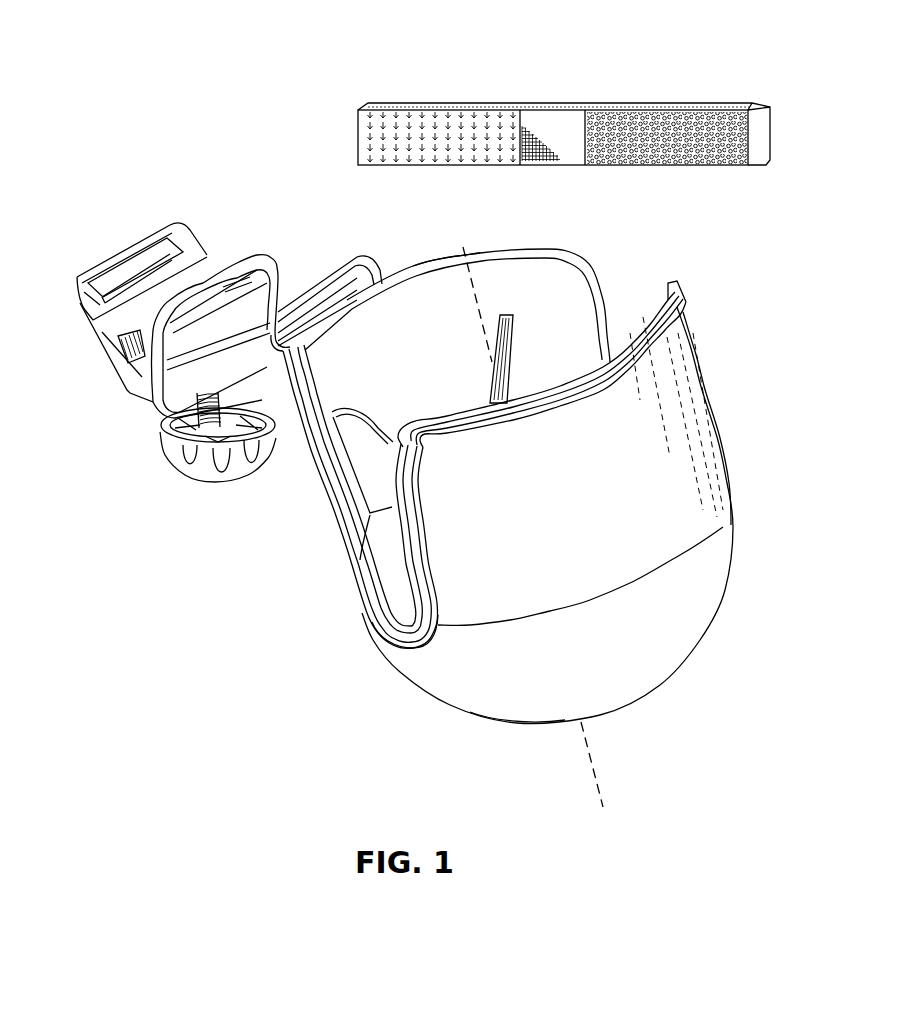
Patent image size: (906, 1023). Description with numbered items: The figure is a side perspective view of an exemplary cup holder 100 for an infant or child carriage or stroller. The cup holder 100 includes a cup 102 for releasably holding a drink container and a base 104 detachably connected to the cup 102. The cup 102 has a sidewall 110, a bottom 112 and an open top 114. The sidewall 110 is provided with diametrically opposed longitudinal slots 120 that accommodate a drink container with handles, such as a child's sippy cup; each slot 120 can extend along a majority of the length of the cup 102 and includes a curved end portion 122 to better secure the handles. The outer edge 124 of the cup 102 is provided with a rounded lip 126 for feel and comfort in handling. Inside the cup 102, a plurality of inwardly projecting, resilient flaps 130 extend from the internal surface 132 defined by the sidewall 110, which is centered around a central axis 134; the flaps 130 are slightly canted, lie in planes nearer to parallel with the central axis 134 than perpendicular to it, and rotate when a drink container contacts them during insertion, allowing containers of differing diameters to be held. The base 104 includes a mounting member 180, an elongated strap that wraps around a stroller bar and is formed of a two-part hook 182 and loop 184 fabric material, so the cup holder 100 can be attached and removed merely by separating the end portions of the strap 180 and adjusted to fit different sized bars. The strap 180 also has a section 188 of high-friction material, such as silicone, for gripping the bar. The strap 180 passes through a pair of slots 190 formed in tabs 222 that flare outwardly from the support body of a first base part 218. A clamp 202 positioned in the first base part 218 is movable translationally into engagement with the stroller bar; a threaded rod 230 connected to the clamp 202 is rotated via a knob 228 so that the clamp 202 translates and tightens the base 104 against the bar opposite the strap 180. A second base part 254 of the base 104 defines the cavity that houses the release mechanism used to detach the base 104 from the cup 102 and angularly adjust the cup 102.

The cup holder 100 is at (160, 80).
The cup 102 is at (726, 376).
The base 104 is at (58, 266).
The sidewall 110 is at (703, 470).
The bottom 112 is at (570, 720).
The open top 114 is at (513, 252).
The longitudinal slots 120 is at (603, 307).
The curved end portion 122 is at (403, 645).
The outer edge 124 is at (453, 277).
The rounded lip 126 is at (527, 403).
The resilient flaps 130 is at (503, 370).
The internal surface 132 is at (537, 288).
The central axis 134 is at (587, 740).
The mounting member 180 is at (615, 105).
The hook 182 is at (445, 118).
The loop 184 is at (693, 157).
The section 188 is at (560, 120).
The slots 190 is at (150, 257).
The clamp 202 is at (130, 352).
The first base part 218 is at (130, 397).
The tabs 222 is at (110, 260).
The knob 228 is at (192, 478).
The threaded rod 230 is at (190, 413).
The second base part 254 is at (397, 280).